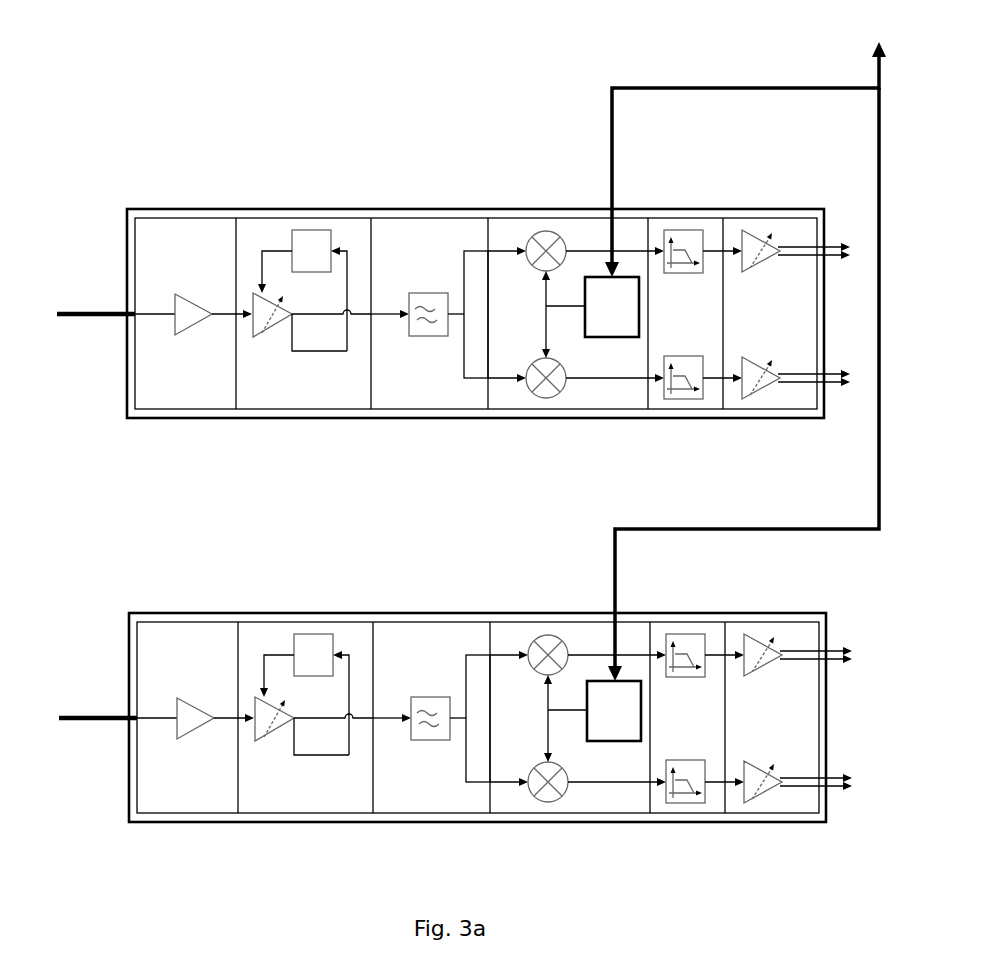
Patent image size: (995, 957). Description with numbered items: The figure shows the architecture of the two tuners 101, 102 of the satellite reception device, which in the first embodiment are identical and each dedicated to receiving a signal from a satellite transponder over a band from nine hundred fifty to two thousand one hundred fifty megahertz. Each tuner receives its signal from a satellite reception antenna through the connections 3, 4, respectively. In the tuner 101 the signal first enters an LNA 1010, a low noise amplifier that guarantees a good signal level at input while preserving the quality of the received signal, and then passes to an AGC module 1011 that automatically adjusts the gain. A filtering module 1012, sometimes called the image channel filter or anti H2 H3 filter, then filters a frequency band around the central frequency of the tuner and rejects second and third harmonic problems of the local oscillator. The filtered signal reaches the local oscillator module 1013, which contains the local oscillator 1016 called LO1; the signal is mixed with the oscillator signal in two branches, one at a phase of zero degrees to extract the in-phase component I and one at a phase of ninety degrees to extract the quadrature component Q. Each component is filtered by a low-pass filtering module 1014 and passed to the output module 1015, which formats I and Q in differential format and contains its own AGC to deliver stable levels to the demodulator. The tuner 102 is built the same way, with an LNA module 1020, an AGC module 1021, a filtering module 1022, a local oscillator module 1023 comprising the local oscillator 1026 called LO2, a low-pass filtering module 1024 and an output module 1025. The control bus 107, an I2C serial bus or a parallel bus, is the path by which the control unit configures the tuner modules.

The connection 3 is at (80, 312).
The connection 4 is at (98, 686).
The tuner 101 is at (259, 418).
The tuner 102 is at (477, 752).
The control bus 107 is at (692, 87).
The LNA 1010 is at (198, 216).
The AGC module 1011 is at (318, 216).
The filtering module 1012 is at (430, 216).
The local oscillator module 1013 is at (555, 216).
The low-pass filtering module 1014 is at (680, 216).
The output module 1015 is at (775, 216).
The local oscillator 1016 is at (600, 337).
The LNA module 1020 is at (195, 683).
The AGC module 1021 is at (314, 683).
The filtering module 1022 is at (431, 683).
The local oscillator module 1023 is at (578, 683).
The low-pass filtering module 1024 is at (700, 683).
The output module 1025 is at (798, 678).
The local oscillator 1026 is at (614, 791).